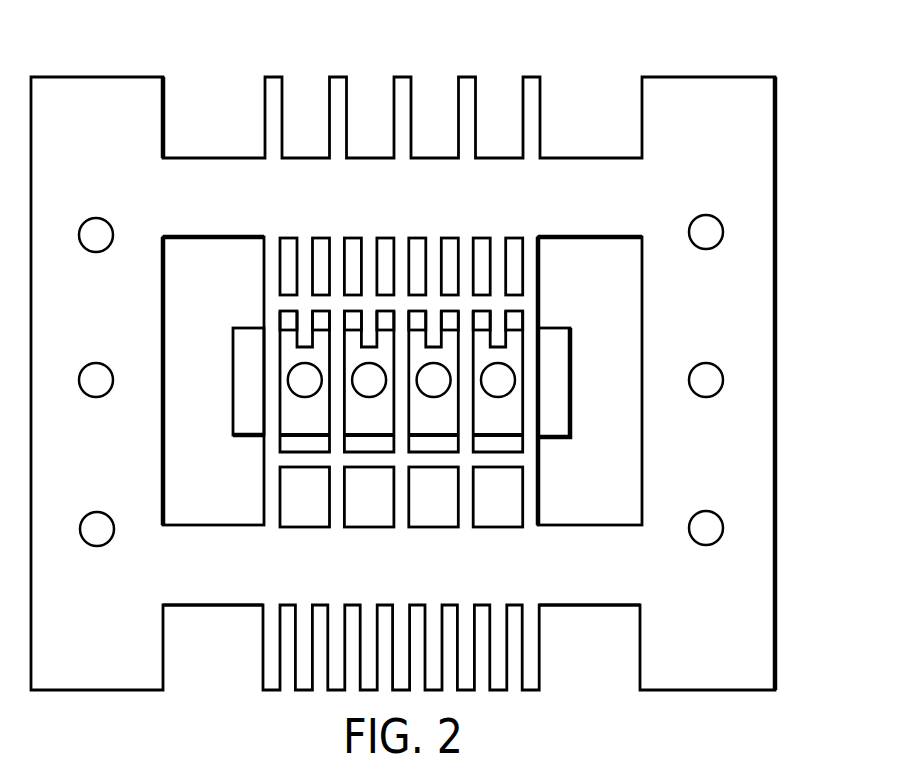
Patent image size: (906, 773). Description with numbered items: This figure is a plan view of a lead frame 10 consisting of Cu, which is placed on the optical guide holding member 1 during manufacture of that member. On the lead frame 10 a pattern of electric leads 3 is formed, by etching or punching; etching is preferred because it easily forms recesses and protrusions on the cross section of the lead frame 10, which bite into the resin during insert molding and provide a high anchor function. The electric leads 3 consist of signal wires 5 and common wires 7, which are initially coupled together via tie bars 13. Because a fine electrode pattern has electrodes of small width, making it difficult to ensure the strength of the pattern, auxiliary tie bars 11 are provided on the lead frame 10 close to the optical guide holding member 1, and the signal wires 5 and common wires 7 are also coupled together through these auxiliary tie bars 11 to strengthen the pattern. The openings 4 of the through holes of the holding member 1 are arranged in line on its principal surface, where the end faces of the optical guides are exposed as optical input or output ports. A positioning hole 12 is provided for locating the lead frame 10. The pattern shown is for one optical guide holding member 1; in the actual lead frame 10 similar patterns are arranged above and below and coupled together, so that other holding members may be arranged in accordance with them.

The optical guide holding member 1 is at (553, 425).
The electric leads 3 is at (208, 285).
The openings 4 is at (495, 388).
The signal wires 5 is at (303, 338).
The common wires 7 is at (272, 390).
The lead frame 10 is at (718, 88).
The auxiliary tie bars 11 is at (505, 460).
The positioning hole 12 is at (712, 529).
The tie bars 13 is at (588, 595).